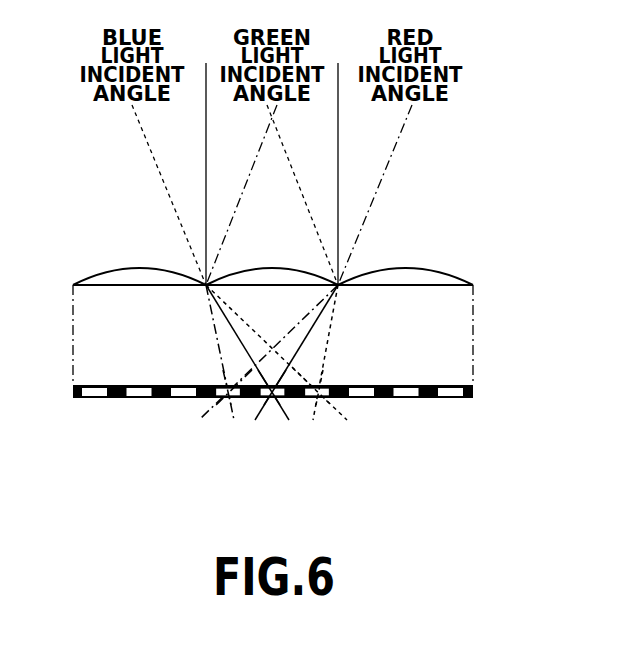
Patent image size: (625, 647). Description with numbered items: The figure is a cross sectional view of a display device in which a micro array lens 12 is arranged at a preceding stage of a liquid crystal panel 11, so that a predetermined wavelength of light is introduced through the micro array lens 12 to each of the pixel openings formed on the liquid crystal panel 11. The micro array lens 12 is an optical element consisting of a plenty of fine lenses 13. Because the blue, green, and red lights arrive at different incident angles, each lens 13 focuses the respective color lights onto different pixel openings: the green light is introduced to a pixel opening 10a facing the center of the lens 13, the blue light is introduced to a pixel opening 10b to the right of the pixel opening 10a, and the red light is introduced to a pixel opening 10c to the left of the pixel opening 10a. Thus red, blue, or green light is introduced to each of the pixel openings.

The pixel opening 10a is at (266, 399).
The pixel opening 10b is at (323, 400).
The pixel opening 10c is at (223, 400).
The liquid crystal panel 11 is at (94, 399).
The micro array lens 12 is at (467, 236).
The lens 13 is at (128, 279).